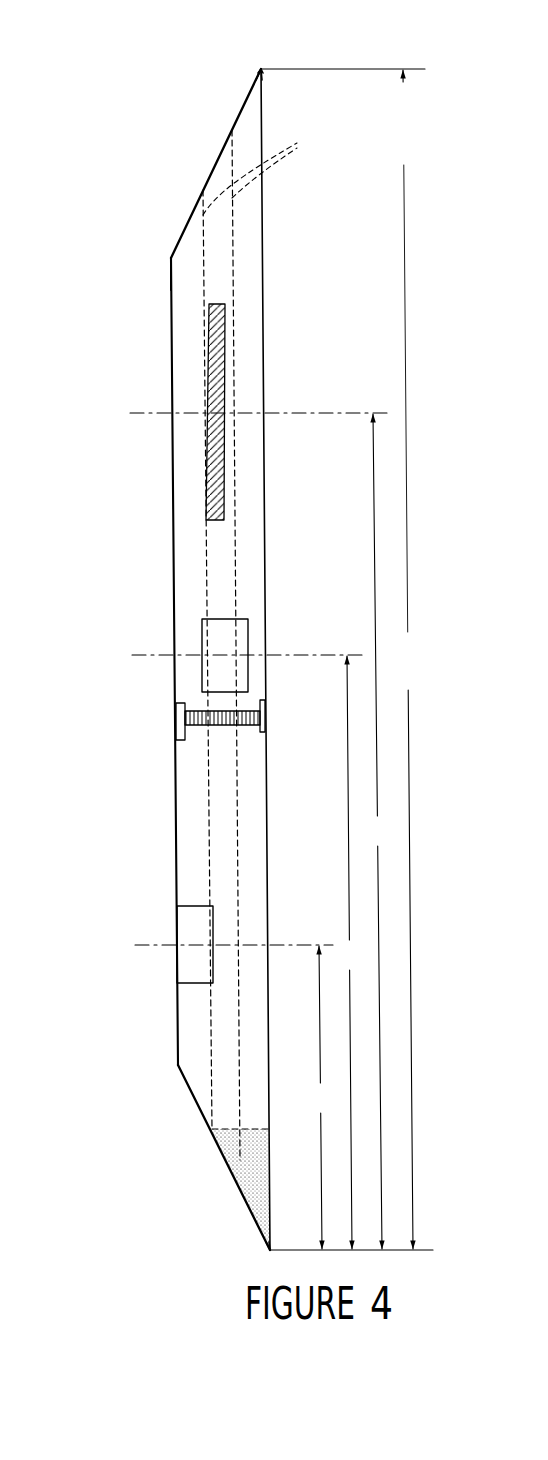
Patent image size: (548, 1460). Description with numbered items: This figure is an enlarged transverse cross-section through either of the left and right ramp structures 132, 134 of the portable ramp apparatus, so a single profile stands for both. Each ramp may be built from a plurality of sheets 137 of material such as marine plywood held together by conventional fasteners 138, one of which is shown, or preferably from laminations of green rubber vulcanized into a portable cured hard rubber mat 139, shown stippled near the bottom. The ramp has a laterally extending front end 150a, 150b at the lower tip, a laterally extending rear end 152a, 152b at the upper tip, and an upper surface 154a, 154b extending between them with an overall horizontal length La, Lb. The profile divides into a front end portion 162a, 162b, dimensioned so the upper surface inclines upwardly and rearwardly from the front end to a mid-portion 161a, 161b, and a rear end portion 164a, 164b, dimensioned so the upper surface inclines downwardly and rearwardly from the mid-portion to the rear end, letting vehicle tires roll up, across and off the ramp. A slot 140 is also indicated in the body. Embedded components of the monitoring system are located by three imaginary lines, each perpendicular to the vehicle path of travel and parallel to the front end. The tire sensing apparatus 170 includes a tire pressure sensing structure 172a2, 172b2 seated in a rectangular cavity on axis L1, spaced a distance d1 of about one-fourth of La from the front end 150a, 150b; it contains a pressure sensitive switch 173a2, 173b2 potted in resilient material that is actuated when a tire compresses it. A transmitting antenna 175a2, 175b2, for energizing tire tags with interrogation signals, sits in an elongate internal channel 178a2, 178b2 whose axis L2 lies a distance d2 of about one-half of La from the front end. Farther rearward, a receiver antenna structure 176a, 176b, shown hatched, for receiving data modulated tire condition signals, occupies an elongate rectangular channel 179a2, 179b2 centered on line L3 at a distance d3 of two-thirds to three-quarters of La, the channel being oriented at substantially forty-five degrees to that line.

The left ramp structure 132 is at (249, 43).
The right ramp structure 134 is at (260, 56).
The rear end of left ramp structure 152a is at (313, 47).
The rear end of right ramp structure 152b is at (262, 68).
The rear end portion of left ramp structure 164a is at (204, 162).
The rear end portion of right ramp structure 164b is at (217, 155).
The sheets of material 137 is at (262, 197).
The upper surface of left ramp structure 154a is at (256, 268).
The upper surface of right ramp structure 154b is at (163, 289).
The mid-portion of left ramp structure 161a is at (120, 661).
The mid-portion of right ramp structure 161b is at (169, 518).
The front end portion of left ramp structure 162a is at (186, 1157).
The front end portion of right ramp structure 162b is at (235, 1191).
The front end of left ramp structure 150a is at (207, 1249).
The front end of right ramp structure 150b is at (268, 1250).
The hard rubber mat 139 is at (250, 1157).
The slot 140 is at (193, 332).
The left receiver antenna structure 176a is at (136, 412).
The right receiver antenna structure 176b is at (204, 379).
The receiver antenna channel 179a2 is at (296, 365).
The receiver antenna channel 179b2 is at (221, 385).
The left transmitting antenna 175a2 is at (283, 618).
The right transmitting antenna 175b2 is at (224, 615).
The transmitting antenna channel 178a2 is at (303, 638).
The transmitting antenna channel 178b2 is at (241, 645).
The tire sensing apparatus 170 is at (188, 636).
The fastener 138 is at (203, 723).
The left tire pressure sensing structure 172a2 is at (139, 902).
The right tire pressure sensing structure 172b2 is at (196, 901).
The pressure sensitive switch 173a2 is at (139, 978).
The pressure sensitive switch 173b2 is at (211, 972).
The axis of tire sensing cavities L1 is at (162, 952).
The axis of transmitting antenna channel L2 is at (147, 662).
The line of receiver antenna channels L3 is at (147, 415).
The spacing of axis L1 from front end d1 is at (320, 1097).
The spacing of axis L2 from front end d2 is at (346, 952).
The spacing of line L3 from front end d3 is at (377, 831).
The overall length of left ramp upper surface La is at (347, 659).
The overall length of right ramp upper surface Lb is at (347, 659).